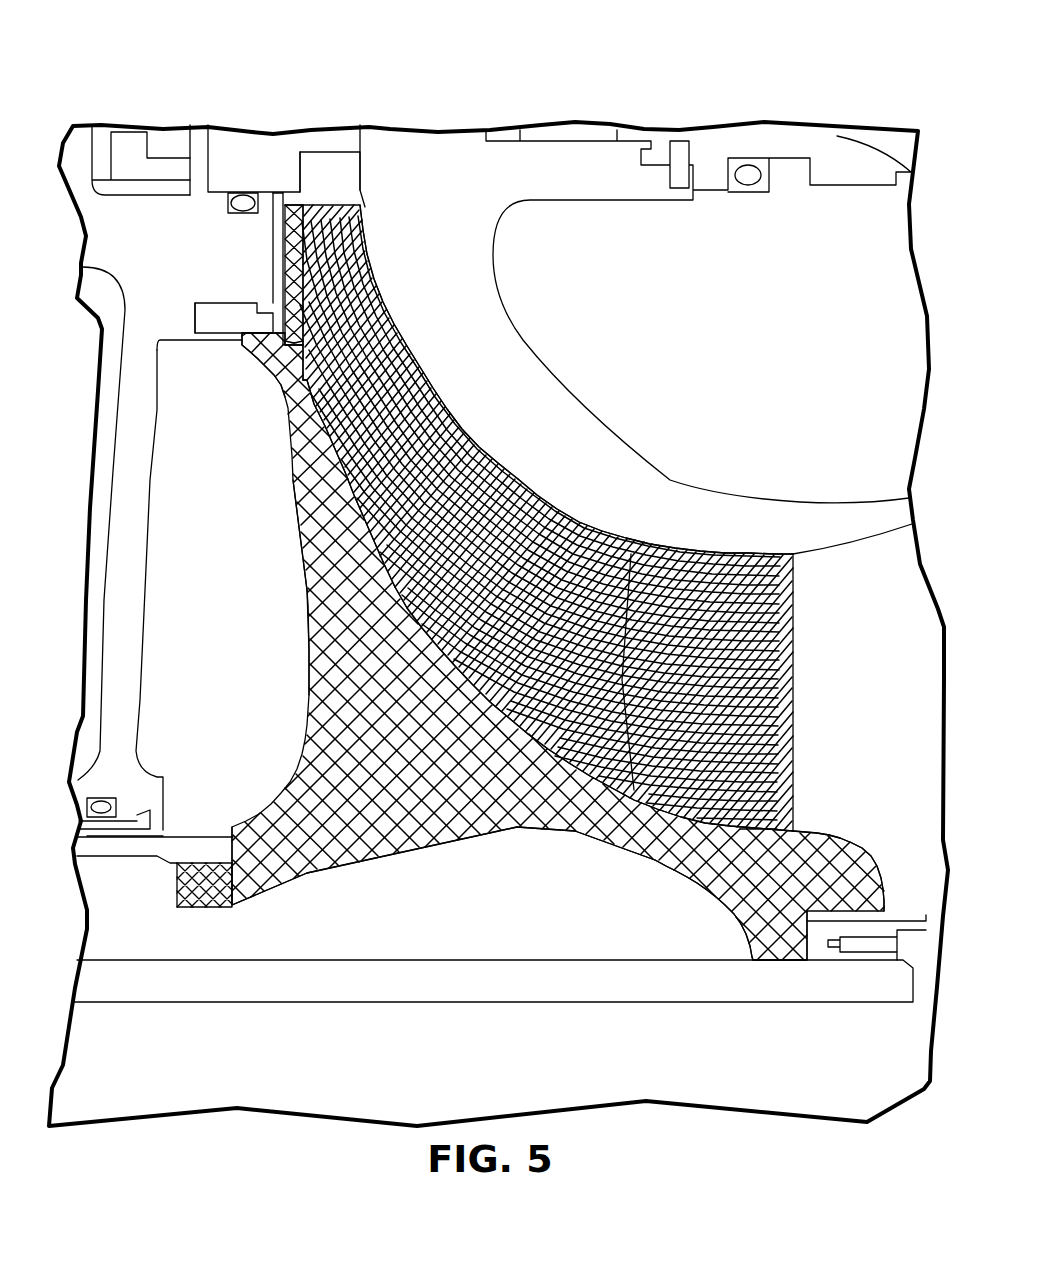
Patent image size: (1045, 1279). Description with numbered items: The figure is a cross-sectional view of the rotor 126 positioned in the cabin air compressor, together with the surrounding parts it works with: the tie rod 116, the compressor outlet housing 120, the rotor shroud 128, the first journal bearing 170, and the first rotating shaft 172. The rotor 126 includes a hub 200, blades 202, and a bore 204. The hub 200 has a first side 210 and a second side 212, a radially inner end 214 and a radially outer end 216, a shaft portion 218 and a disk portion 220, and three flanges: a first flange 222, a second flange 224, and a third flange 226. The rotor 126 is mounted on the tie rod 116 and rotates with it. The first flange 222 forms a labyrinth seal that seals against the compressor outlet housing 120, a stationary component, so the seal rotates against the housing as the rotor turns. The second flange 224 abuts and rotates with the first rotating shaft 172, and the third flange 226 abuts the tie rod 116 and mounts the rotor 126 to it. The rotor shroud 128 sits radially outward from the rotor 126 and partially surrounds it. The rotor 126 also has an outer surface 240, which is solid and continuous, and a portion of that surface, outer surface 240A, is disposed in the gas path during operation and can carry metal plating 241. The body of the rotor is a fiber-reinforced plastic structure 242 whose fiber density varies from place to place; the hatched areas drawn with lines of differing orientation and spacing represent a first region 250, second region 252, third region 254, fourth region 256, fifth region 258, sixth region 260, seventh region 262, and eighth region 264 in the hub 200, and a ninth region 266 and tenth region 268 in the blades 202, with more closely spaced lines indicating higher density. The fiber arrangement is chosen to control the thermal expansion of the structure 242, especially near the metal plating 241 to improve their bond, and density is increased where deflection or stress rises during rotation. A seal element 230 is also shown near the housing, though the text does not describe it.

The tie rod 116 is at (850, 980).
The compressor outlet housing 120 is at (137, 257).
The rotor 126 is at (840, 729).
The rotor shroud 128 is at (438, 208).
The first journal bearing 170 is at (112, 822).
The first rotating shaft 172 is at (120, 848).
The hub 200 is at (315, 493).
The blades 202 is at (795, 605).
The bore 204 is at (545, 917).
The first side 210 is at (275, 623).
The second side 212 is at (855, 843).
The radially inner end 214 is at (696, 973).
The radially outer end 216 is at (335, 192).
The shaft portion 218 is at (660, 840).
The disk portion 220 is at (152, 456).
The first flange 222 is at (240, 342).
The second flange 224 is at (200, 907).
The third flange 226 is at (777, 962).
The seal 230 is at (255, 330).
The outer surface 240 is at (310, 709).
The outer surface 240A is at (798, 830).
The metal plating 241 is at (632, 554).
The fiber-reinforced plastic structure 242 is at (391, 863).
The first region 250 is at (240, 887).
The second region 252 is at (473, 822).
The third region 254 is at (753, 932).
The fourth region 256 is at (862, 900).
The fifth region 258 is at (307, 670).
The sixth region 260 is at (327, 548).
The seventh region 262 is at (273, 367).
The eighth region 264 is at (282, 215).
The ninth region 266 is at (448, 435).
The tenth region 268 is at (718, 554).